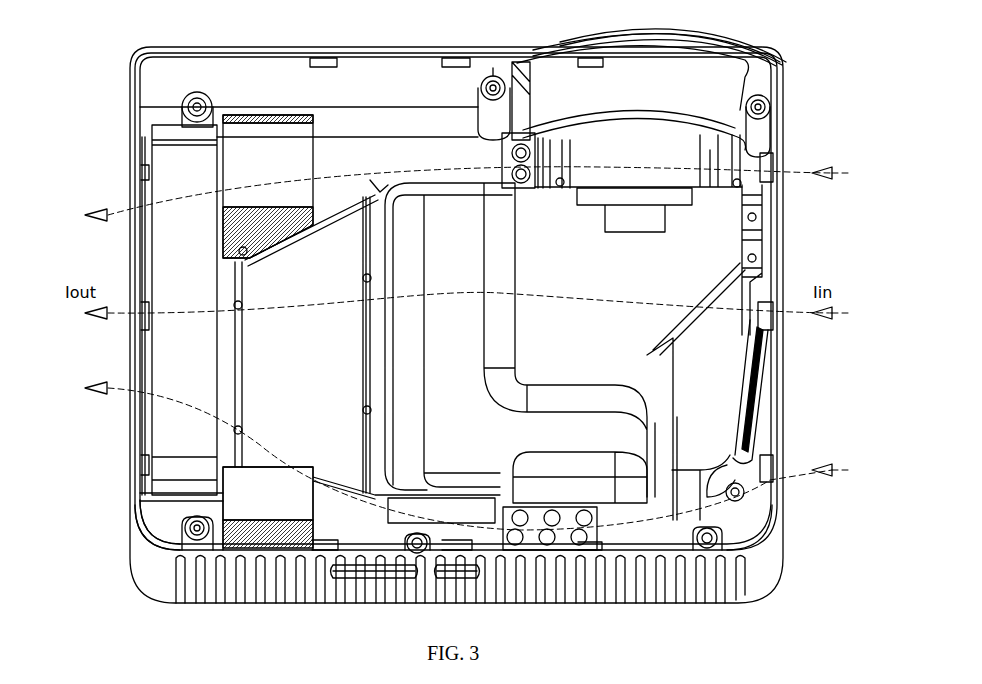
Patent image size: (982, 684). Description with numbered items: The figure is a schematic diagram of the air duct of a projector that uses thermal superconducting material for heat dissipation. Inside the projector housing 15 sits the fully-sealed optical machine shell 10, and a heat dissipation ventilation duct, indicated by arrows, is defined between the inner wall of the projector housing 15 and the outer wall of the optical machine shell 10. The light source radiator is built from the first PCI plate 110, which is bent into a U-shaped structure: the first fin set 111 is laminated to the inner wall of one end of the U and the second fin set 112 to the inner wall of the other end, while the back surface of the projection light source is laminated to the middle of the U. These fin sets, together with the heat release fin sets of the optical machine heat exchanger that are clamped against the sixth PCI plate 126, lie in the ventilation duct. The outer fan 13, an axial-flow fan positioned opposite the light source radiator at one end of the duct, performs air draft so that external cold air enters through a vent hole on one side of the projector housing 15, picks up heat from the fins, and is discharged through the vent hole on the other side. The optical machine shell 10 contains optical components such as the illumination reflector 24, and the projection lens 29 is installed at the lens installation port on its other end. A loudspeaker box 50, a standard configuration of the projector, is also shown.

The optical machine shell 10 is at (714, 222).
The outer fan 13 is at (176, 445).
The projector housing 15 is at (133, 77).
The illumination reflector 24 is at (325, 280).
The projection lens 29 is at (693, 32).
The loudspeaker box 50 is at (726, 404).
The first PCI plate 110 is at (222, 534).
The first fin set 111 is at (250, 165).
The second fin set 112 is at (254, 498).
The sixth PCI plate 126 is at (778, 519).